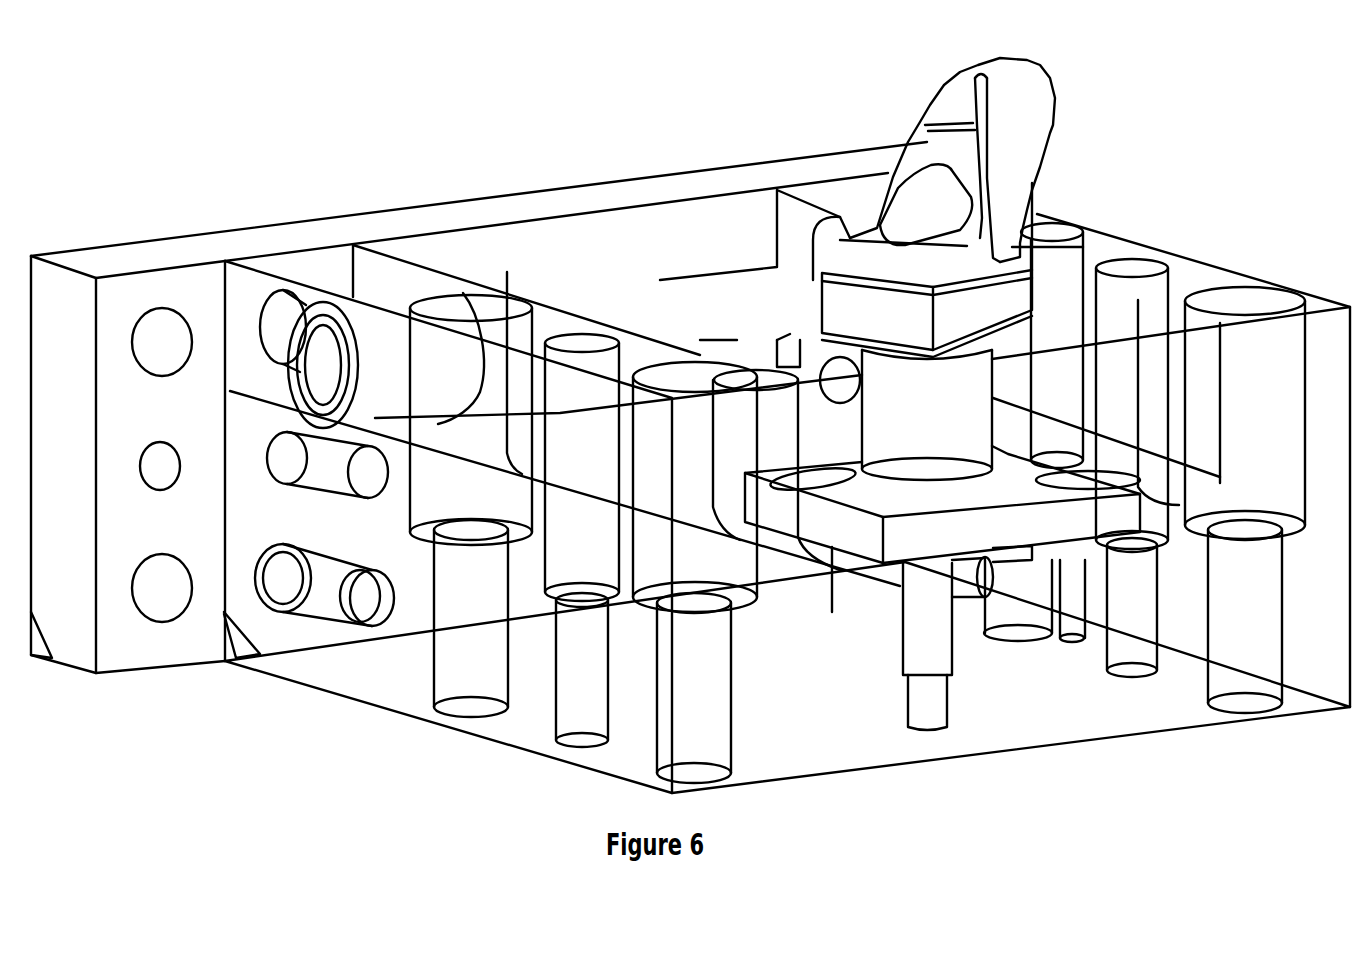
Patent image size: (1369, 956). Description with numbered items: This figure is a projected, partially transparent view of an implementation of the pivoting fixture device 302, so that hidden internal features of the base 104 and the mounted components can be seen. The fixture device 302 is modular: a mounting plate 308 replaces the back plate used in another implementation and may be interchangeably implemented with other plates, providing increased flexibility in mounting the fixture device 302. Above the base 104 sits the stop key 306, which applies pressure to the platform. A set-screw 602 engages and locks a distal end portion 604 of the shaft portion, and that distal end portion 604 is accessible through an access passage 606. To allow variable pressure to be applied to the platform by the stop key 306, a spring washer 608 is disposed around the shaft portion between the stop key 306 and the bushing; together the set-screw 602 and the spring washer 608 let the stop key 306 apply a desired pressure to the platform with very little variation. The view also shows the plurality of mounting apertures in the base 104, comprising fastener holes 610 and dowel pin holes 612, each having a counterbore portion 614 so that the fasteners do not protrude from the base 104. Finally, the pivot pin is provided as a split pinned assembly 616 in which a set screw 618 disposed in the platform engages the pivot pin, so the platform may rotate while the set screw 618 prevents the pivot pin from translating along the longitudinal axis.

The base 104 is at (1083, 713).
The pivoting fixture device 302 is at (1155, 95).
The stop key 306 is at (970, 293).
The mounting plate 308 is at (305, 232).
The set-screw 602 is at (968, 567).
The distal end portion 604 is at (925, 608).
The access passage 606 is at (1177, 548).
The spring washer 608 is at (993, 340).
The fastener holes 610 is at (453, 660).
The dowel pin holes 612 is at (580, 712).
The counterbore portion 614 is at (1270, 365).
The split pinned assembly 616 is at (737, 333).
The set screw 618 is at (777, 337).